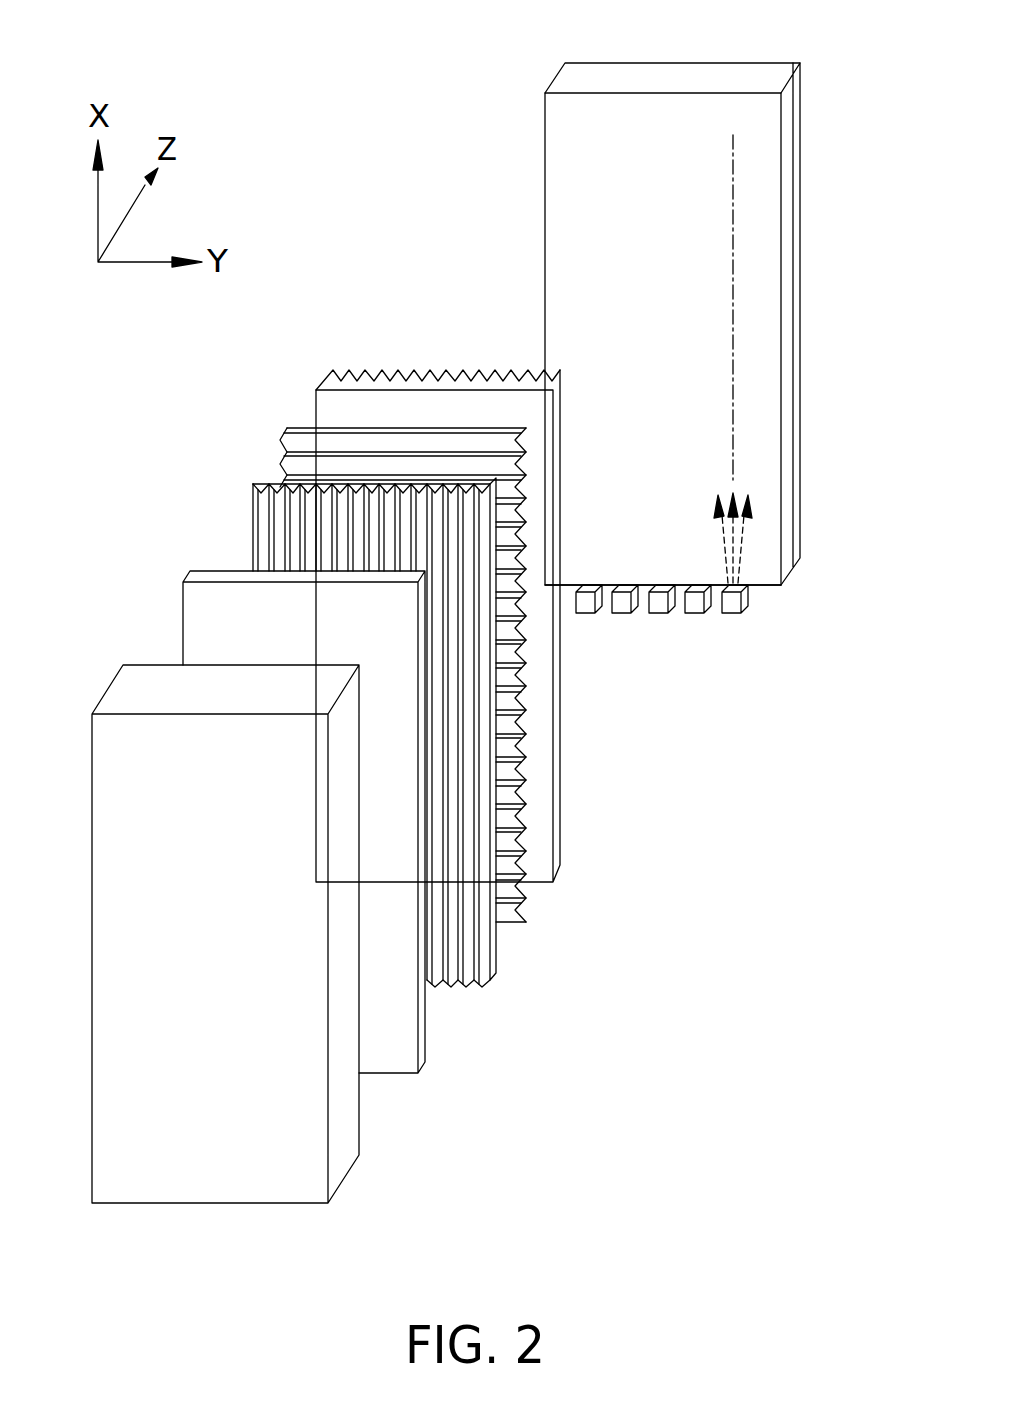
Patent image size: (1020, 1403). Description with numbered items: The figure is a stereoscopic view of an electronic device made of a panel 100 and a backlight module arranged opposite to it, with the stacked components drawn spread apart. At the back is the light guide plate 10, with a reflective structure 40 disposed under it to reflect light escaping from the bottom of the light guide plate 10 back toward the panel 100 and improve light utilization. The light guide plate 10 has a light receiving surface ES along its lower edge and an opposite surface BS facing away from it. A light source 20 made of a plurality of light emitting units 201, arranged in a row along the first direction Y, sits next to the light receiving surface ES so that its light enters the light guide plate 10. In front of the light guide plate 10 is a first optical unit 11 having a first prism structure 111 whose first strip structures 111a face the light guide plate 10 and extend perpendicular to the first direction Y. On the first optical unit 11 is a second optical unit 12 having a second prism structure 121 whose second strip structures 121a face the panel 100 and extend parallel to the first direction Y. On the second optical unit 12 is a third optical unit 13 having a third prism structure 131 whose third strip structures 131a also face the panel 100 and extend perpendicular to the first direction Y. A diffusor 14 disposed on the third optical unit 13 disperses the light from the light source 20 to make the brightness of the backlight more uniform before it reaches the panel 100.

The light guide plate 10 is at (702, 344).
The reflective structure 40 is at (800, 228).
The opposite surface BS is at (700, 85).
The light receiving surface ES is at (789, 588).
The light source 20 is at (662, 636).
The light emitting units 201 is at (695, 614).
The first optical unit 11 is at (457, 612).
The first prism structure 111 is at (421, 343).
The first strip structures 111a is at (348, 374).
The second optical unit 12 is at (356, 694).
The second prism structure 121 is at (338, 436).
The second strip structures 121a is at (285, 441).
The third optical unit 13 is at (305, 764).
The third prism structure 131 is at (299, 469).
The third strip structures 131a is at (258, 485).
The diffusor 14 is at (400, 1060).
The panel 100 is at (220, 1195).